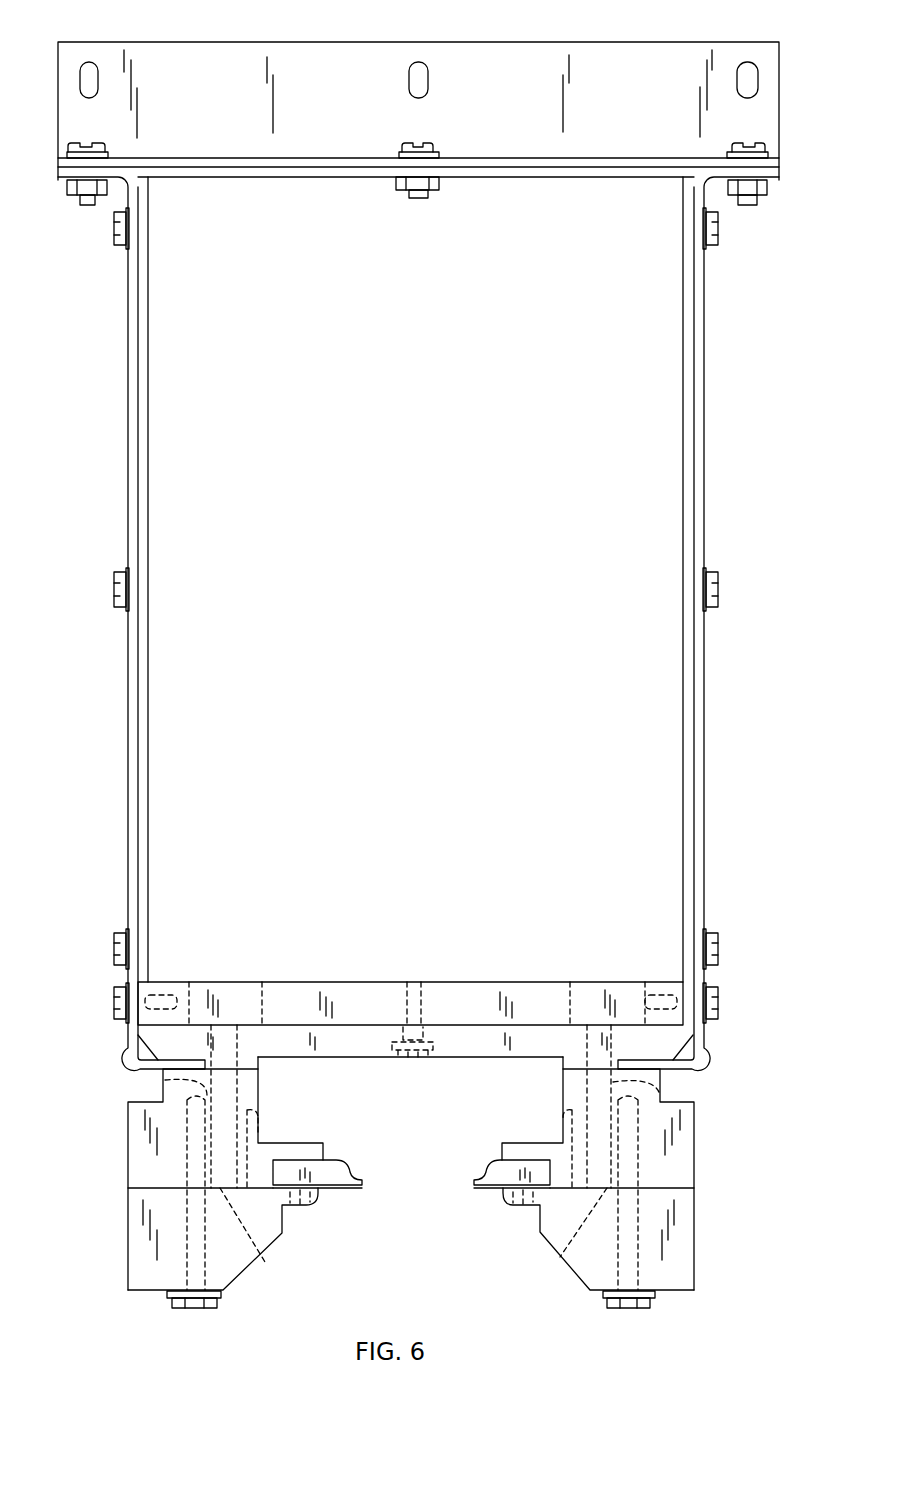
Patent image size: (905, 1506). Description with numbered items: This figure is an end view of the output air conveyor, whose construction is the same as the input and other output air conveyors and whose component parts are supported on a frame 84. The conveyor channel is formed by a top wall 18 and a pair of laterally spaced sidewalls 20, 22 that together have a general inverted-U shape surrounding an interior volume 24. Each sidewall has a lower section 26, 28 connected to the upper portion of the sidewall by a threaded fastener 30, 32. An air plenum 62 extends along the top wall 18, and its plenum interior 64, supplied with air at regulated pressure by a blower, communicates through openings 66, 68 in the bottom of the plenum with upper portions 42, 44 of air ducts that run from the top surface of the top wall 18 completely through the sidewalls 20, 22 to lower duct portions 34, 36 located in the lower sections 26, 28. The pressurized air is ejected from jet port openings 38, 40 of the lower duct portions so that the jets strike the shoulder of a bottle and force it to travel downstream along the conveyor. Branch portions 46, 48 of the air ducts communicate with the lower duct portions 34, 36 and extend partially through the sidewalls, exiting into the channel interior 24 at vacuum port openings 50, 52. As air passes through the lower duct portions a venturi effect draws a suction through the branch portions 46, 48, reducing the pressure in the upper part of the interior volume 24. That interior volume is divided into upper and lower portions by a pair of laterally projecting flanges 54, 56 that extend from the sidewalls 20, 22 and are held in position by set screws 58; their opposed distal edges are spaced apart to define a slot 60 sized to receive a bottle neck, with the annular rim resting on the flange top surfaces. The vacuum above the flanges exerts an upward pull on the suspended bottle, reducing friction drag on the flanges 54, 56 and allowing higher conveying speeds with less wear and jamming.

The frame 84 is at (319, 78).
The air plenum 62 is at (125, 478).
The plenum interior 64 is at (436, 516).
The plenum opening 66 is at (229, 982).
The plenum opening 68 is at (603, 982).
The top wall 18 is at (460, 1037).
The sidewall 20 is at (258, 1083).
The sidewall 22 is at (563, 1088).
The interior volume 24 is at (424, 1101).
The vacuum port opening 50 is at (270, 1131).
The vacuum port opening 52 is at (553, 1129).
The flange 54 is at (357, 1181).
The flange 56 is at (467, 1180).
The slot 60 is at (430, 1197).
The lower section of sidewall 26 is at (127, 1260).
The lower section of sidewall 28 is at (697, 1247).
The branch portion of air duct 46 is at (240, 1157).
The branch portion of air duct 48 is at (585, 1160).
The upper portion of air duct 42 is at (165, 1080).
The upper portion of air duct 44 is at (613, 1082).
The threaded fastener 30 is at (186, 1310).
The threaded fastener 32 is at (644, 1308).
The set screw 58 is at (298, 1208).
The lower portion of air duct 34 is at (265, 1262).
The lower portion of air duct 36 is at (557, 1248).
The jet port opening 38 is at (250, 1286).
The jet port opening 40 is at (557, 1258).